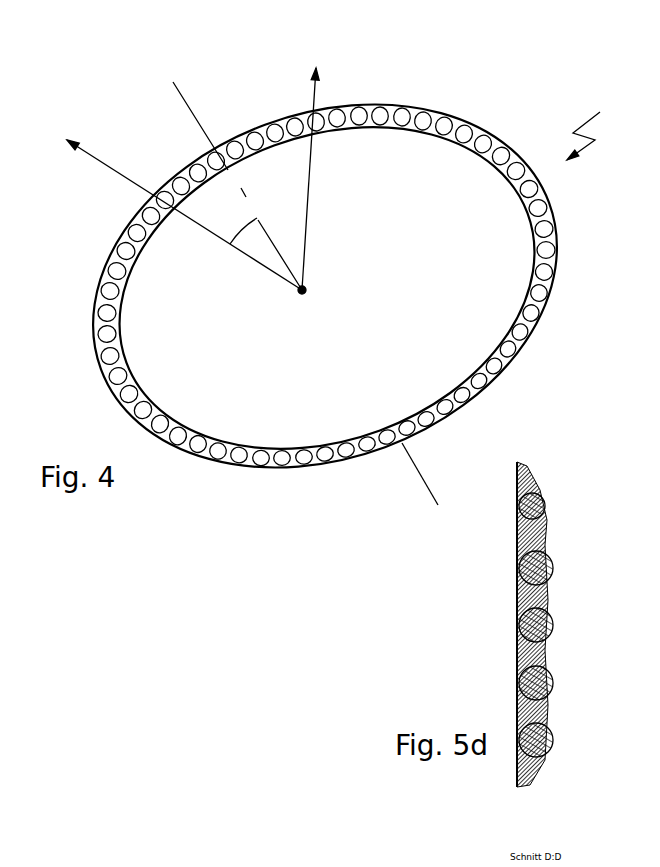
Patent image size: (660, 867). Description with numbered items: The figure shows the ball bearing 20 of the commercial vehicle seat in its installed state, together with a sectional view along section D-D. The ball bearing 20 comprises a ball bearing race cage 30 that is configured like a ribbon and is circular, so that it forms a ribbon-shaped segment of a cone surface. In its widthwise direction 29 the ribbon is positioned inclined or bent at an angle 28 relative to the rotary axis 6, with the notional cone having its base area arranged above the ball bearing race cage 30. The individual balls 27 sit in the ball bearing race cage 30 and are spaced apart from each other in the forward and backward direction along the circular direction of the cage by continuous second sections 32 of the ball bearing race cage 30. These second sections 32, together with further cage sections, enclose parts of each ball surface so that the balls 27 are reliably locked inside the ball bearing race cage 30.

In FIG. 4, the rotary axis 6 is at (193, 114).
In FIG. 4, the ball bearing 20 is at (595, 123).
In FIG. 4, the ball 27 is at (388, 120).
In FIG. 5D, the ball 27 is at (535, 513).
In FIG. 4, the angle 28 is at (258, 248).
In FIG. 4, the widthwise direction 29 is at (107, 166).
In FIG. 4, the ball bearing race cage 30 is at (545, 300).
In FIG. 5D, the second section 32 is at (533, 537).